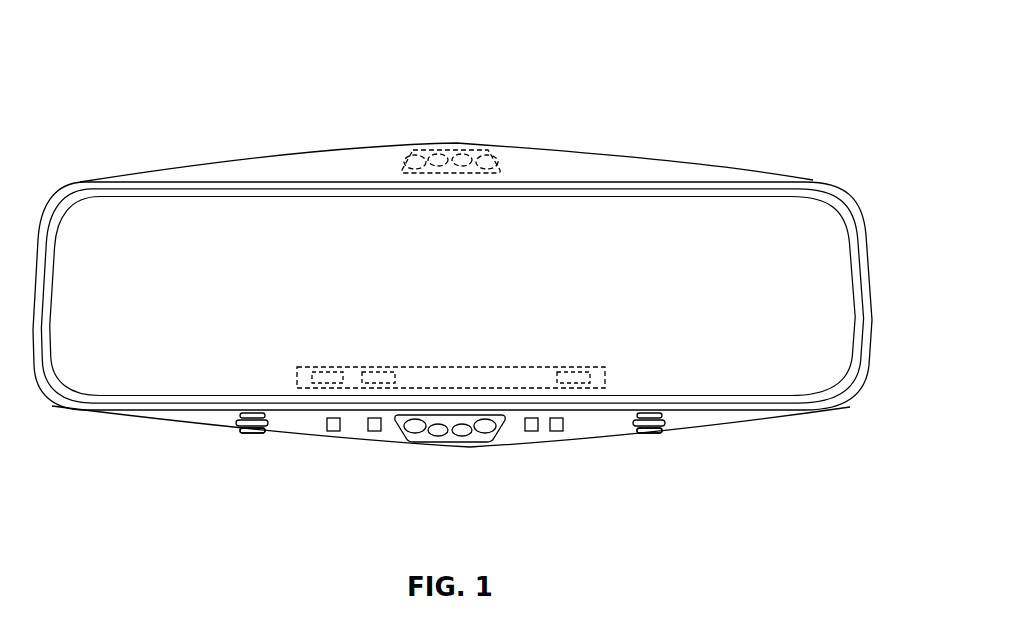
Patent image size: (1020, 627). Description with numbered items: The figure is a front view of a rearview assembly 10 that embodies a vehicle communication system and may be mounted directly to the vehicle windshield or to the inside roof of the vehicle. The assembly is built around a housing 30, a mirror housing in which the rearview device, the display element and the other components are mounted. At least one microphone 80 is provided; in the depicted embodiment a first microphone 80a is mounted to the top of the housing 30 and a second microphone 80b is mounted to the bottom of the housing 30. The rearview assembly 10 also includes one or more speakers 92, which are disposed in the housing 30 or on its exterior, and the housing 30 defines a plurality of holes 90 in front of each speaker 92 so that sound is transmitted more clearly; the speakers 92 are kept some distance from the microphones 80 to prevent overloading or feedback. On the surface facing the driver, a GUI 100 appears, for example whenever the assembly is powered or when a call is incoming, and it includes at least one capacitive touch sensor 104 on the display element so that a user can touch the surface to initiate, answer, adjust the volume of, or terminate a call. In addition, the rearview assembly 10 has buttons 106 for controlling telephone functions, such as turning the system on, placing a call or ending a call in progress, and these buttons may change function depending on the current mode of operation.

The rearview assembly 10 is at (792, 75).
The housing 30 is at (676, 160).
The microphone 80 is at (437, 443).
The first microphone 80a is at (470, 149).
The second microphone 80b is at (456, 443).
The holes 90 is at (232, 423).
The speaker 92 is at (257, 437).
The GUI 100 is at (475, 366).
The capacitive touch sensor 104 is at (376, 372).
The button 106 is at (377, 432).